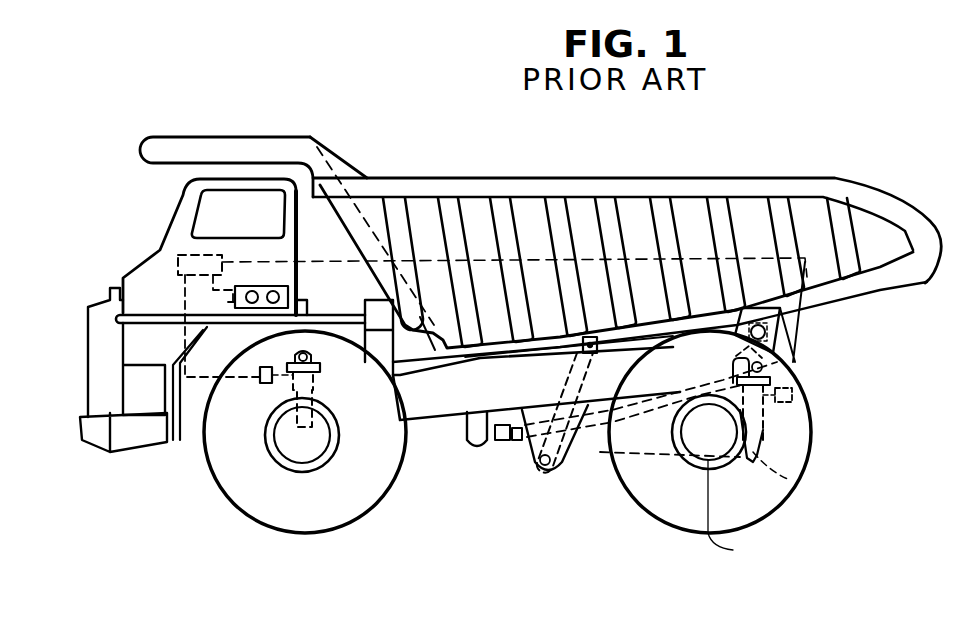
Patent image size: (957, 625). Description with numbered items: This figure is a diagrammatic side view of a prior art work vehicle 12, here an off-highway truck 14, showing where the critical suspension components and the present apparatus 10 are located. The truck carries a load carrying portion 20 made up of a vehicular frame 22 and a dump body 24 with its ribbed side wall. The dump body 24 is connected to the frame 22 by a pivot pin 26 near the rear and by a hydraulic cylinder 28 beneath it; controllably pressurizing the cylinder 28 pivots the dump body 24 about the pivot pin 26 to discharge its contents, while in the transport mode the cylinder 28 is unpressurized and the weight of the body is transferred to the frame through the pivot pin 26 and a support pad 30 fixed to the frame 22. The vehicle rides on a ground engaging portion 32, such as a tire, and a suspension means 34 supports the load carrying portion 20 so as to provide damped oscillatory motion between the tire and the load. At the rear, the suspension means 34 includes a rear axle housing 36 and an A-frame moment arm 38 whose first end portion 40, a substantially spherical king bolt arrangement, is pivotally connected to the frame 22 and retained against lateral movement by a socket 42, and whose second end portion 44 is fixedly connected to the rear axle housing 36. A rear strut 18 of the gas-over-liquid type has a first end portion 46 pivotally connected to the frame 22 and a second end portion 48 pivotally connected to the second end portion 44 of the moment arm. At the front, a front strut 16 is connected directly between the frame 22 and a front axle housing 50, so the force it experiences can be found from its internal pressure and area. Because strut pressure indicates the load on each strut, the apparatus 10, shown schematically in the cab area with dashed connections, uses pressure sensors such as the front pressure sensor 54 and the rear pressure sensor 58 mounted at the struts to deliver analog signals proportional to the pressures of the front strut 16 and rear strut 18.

The apparatus 10 is at (180, 250).
The work vehicle 12 is at (348, 120).
The off-highway truck 14 is at (247, 223).
The front strut 16 is at (312, 382).
The rear strut 18 is at (762, 430).
The load carrying portion 20 is at (733, 168).
The vehicular frame 22 is at (443, 403).
The dump body 24 is at (650, 240).
The pivot pin 26 is at (777, 337).
The hydraulic cylinder 28 is at (567, 465).
The support pad 30 is at (540, 365).
The ground engaging portion 32 is at (668, 540).
The suspension means 34 is at (659, 467).
The rear axle housing 36 is at (673, 433).
The A-frame moment arm 38 is at (598, 443).
The first end portion 40 is at (517, 463).
The socket 42 is at (475, 433).
The second end portion 44 is at (731, 512).
The first end portion 46 is at (780, 382).
The second end portion 48 is at (790, 480).
The front axle housing 50 is at (293, 450).
The pressure sensor 54 is at (257, 383).
The pressure sensor 58 is at (792, 395).